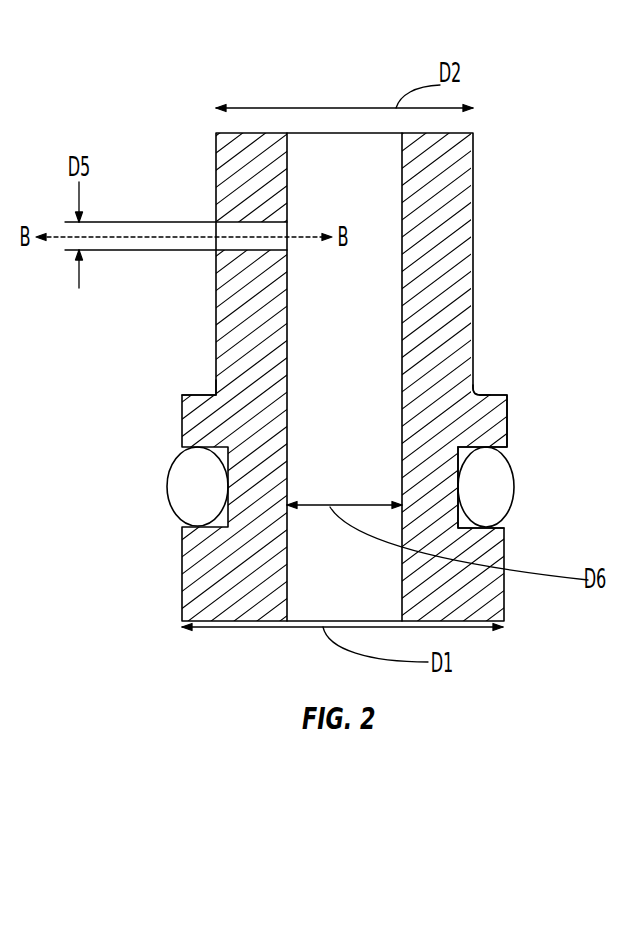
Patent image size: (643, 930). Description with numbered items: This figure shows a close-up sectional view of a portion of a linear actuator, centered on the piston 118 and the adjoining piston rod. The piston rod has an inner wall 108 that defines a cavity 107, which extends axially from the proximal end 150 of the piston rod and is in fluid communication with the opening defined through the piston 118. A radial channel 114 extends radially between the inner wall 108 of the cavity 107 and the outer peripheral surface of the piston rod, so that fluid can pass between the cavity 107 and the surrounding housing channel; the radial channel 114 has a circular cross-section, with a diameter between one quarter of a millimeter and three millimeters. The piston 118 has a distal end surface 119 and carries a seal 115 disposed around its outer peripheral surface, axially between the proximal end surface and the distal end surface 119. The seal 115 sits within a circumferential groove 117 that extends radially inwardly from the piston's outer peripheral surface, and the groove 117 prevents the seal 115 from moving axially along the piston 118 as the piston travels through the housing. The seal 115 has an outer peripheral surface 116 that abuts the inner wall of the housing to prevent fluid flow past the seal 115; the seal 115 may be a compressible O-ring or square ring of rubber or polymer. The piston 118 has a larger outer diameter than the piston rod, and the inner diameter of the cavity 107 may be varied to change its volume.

The cavity 107 is at (358, 289).
The inner wall 108 is at (397, 231).
The radial channel 114 is at (216, 222).
The seal 115 is at (190, 482).
The outer peripheral surface 116 is at (515, 481).
The circumferential groove 117 is at (477, 514).
The piston 118 is at (505, 408).
The distal end surface 119 is at (492, 395).
The proximal end 150 is at (210, 391).